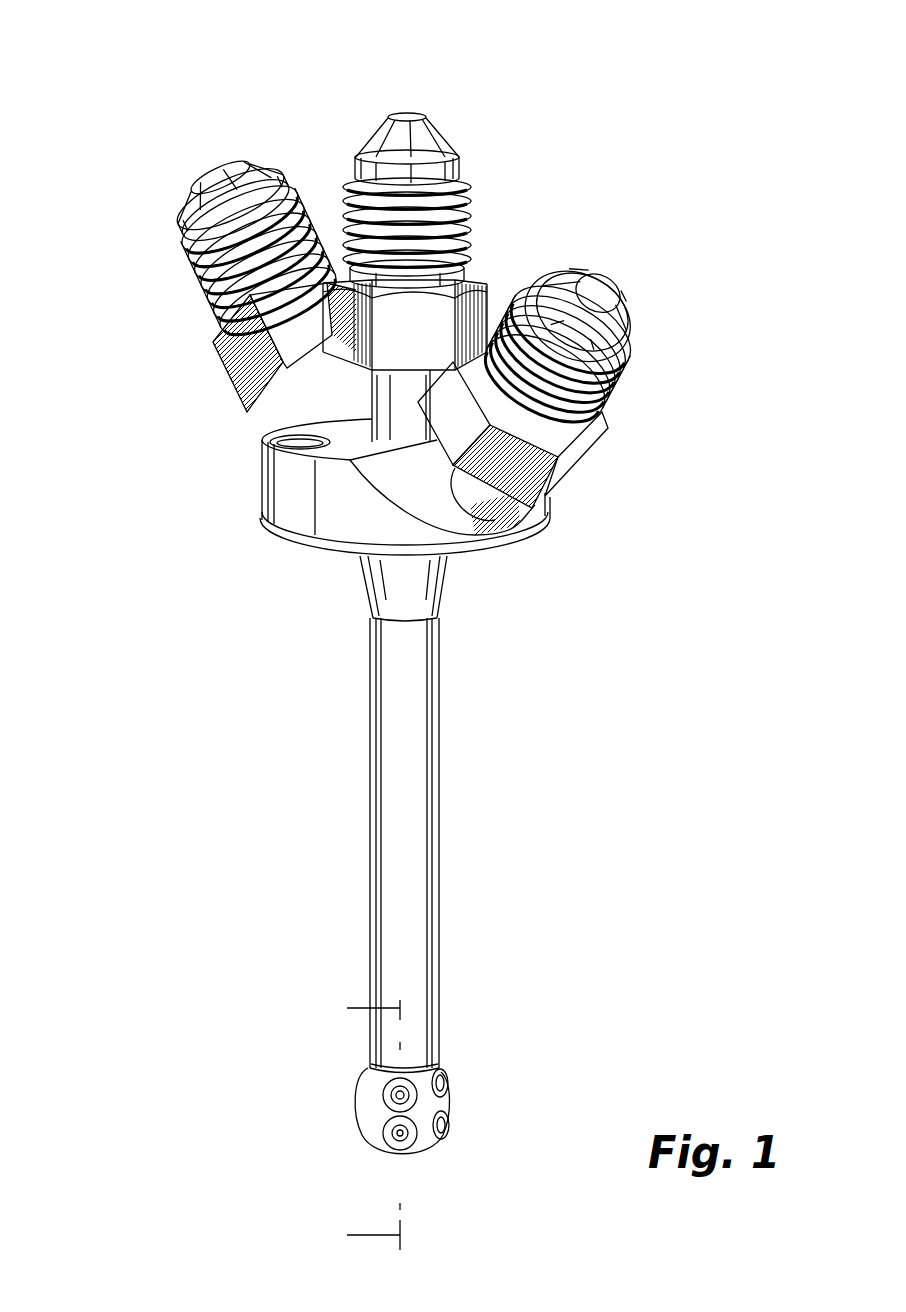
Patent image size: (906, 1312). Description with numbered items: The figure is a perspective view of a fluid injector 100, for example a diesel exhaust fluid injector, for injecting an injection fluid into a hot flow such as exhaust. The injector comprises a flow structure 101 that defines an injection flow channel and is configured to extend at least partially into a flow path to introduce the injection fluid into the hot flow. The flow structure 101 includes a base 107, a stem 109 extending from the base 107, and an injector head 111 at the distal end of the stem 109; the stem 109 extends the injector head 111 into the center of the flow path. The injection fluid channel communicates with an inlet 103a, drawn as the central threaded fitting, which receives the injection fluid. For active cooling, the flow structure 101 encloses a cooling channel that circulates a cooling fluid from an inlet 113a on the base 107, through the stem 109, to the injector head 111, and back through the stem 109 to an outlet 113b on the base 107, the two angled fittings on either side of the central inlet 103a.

The fluid injector 100 is at (172, 116).
The flow structure 101 is at (223, 489).
The inlet 103a is at (440, 150).
The base 107 is at (337, 527).
The stem 109 is at (385, 810).
The injector head 111 is at (462, 1099).
The inlet 113a is at (583, 445).
The outlet 113b is at (225, 365).